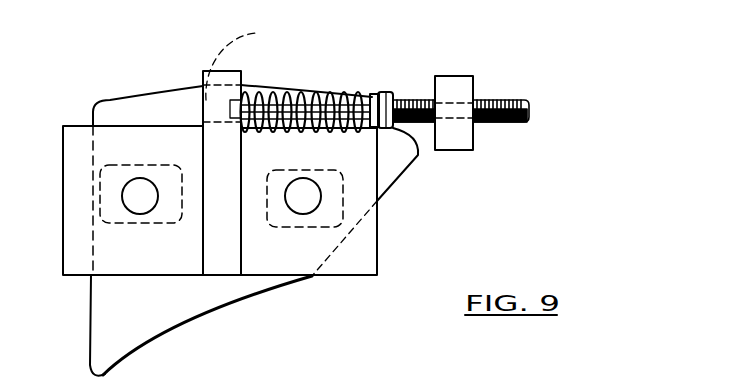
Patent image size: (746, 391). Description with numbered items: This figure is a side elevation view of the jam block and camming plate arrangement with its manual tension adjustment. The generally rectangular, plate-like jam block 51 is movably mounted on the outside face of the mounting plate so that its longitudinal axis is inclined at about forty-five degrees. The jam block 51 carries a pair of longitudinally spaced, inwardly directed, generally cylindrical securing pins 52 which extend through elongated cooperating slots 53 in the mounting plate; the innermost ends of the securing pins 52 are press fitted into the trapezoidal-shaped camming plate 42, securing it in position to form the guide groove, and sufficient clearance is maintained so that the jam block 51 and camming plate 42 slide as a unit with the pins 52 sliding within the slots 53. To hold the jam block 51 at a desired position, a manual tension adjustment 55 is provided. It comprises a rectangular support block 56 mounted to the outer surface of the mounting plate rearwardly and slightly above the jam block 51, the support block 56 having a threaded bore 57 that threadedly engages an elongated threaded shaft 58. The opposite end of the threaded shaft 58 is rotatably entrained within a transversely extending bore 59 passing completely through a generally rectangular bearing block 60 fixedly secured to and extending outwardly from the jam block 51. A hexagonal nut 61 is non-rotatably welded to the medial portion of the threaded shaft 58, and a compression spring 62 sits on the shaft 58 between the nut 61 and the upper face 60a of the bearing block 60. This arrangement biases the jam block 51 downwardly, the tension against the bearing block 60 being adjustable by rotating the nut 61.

The camming plate 42 is at (152, 93).
The jam block 51 is at (78, 130).
The securing pins 52 is at (122, 197).
The slots 53 is at (110, 223).
The tension adjustment 55 is at (378, 77).
The support block 56 is at (465, 83).
The threaded bore 57 is at (447, 119).
The threaded shaft 58 is at (528, 108).
The bore 59 is at (245, 61).
The bearing block 60 is at (225, 262).
The upper face of bearing block 60a is at (240, 152).
The hexagonal nut 61 is at (387, 93).
The compression spring 62 is at (288, 93).